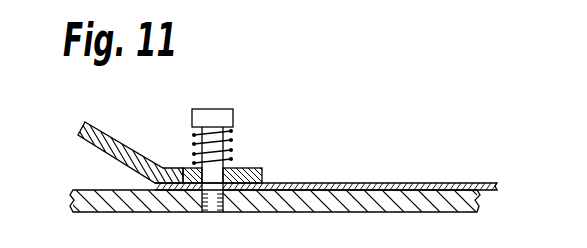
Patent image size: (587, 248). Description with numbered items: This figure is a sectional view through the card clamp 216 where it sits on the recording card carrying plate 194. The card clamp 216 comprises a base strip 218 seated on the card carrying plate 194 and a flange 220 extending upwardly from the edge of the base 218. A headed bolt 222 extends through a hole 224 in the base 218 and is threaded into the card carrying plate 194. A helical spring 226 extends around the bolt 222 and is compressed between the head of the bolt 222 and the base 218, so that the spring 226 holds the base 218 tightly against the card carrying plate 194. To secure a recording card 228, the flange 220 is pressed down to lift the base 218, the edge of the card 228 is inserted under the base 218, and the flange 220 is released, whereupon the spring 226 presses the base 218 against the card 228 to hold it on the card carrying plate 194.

The recording card carrying plate 194 is at (105, 203).
The card clamp 216 is at (188, 138).
The base strip 218 is at (242, 168).
The flange 220 is at (95, 130).
The headed bolt 222 is at (212, 116).
The hole 224 is at (185, 168).
The helical spring 226 is at (230, 137).
The recording card 228 is at (430, 183).